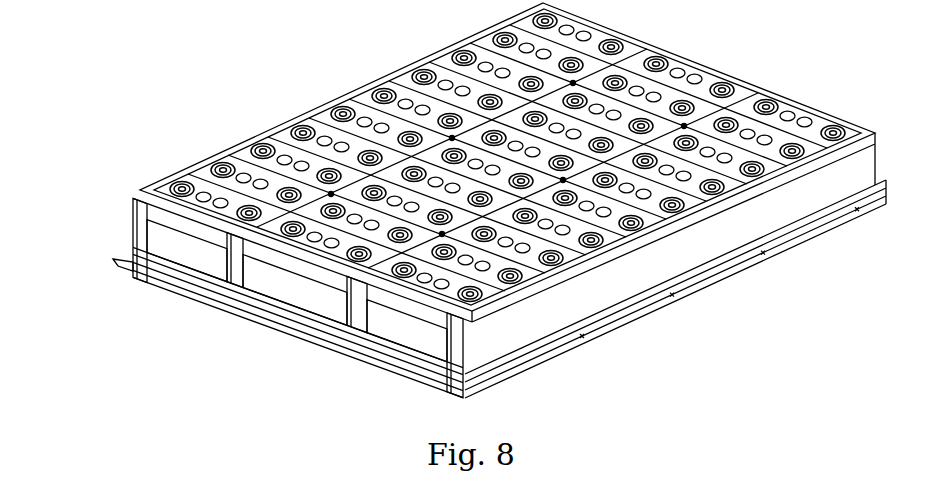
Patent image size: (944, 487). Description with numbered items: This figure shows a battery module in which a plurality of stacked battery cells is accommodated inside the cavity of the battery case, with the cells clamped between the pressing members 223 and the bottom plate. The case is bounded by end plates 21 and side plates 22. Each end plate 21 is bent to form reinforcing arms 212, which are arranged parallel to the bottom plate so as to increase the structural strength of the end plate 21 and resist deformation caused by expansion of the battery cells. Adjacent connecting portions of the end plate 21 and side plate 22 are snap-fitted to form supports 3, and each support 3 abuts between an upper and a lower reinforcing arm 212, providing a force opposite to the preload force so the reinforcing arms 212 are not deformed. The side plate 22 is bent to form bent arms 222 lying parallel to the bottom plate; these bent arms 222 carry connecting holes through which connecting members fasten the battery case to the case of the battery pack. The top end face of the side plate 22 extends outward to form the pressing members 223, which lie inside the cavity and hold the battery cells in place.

The support 3 is at (130, 236).
The end plate 21 is at (380, 333).
The reinforcing arm 212 is at (202, 245).
The side plate 22 is at (728, 238).
The bent arm 222 is at (113, 259).
The pressing member 223 is at (640, 238).